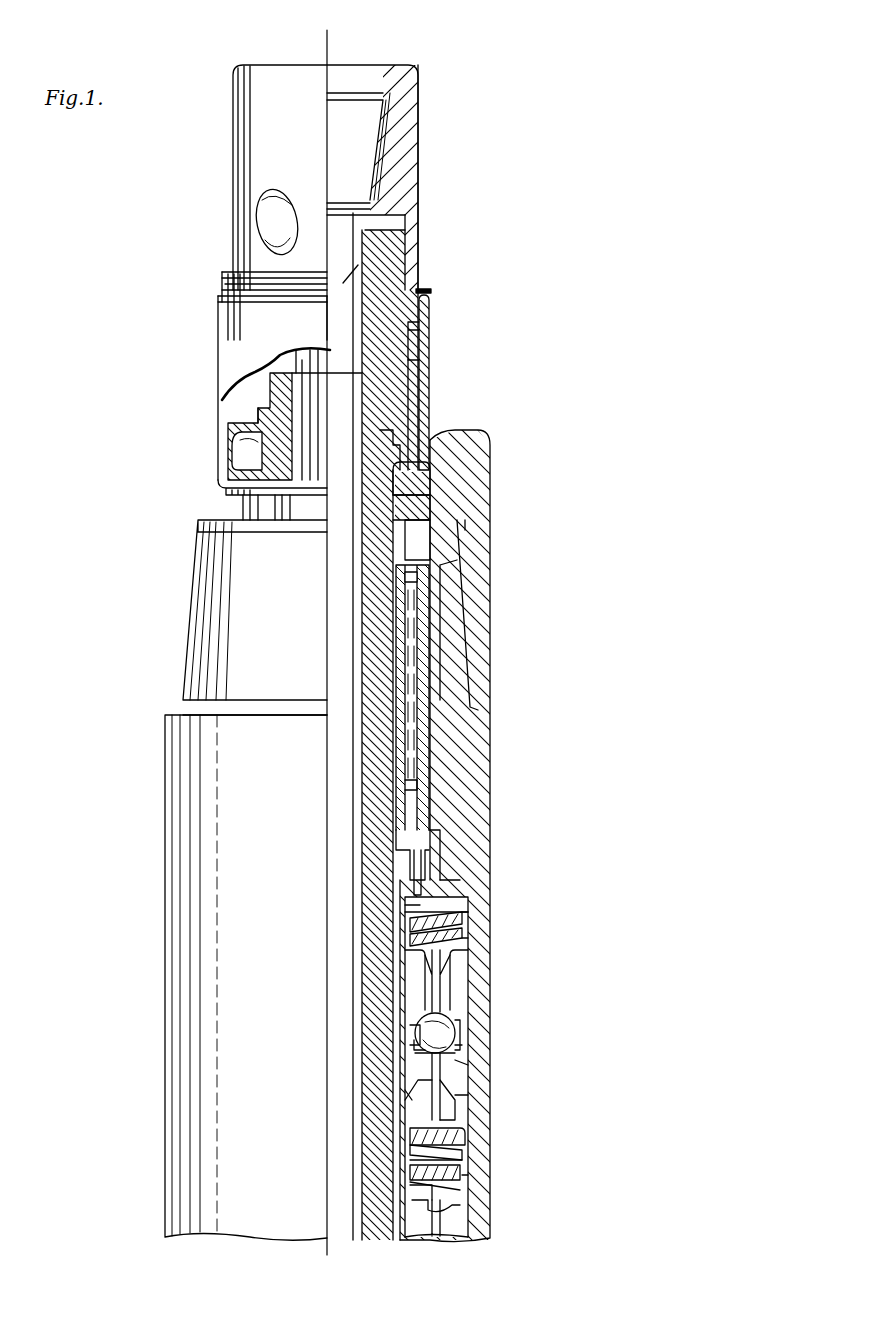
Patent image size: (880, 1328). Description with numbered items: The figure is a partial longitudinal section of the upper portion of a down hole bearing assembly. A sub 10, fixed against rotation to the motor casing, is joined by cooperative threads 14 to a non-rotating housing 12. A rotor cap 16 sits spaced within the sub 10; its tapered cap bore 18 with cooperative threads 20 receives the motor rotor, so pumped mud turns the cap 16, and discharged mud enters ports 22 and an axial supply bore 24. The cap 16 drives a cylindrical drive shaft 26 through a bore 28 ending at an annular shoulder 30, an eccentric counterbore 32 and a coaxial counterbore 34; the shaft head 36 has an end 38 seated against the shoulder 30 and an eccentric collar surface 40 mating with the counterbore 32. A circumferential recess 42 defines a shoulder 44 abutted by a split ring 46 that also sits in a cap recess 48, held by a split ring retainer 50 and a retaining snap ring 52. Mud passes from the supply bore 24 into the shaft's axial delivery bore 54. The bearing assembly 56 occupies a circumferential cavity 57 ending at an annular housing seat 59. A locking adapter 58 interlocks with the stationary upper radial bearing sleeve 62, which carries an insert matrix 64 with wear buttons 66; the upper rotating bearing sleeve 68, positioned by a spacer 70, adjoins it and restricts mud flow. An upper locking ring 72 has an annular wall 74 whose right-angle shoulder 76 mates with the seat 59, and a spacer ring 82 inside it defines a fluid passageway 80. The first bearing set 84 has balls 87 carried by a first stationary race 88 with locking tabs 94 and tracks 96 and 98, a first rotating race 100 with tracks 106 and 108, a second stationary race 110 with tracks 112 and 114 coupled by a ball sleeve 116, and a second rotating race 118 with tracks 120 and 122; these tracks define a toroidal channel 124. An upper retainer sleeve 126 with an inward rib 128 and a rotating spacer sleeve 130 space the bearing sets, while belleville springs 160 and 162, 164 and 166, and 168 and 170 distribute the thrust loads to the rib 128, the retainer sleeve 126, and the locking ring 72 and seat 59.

The sub 10 is at (480, 625).
The housing 12 is at (492, 748).
The cooperative threads 14 is at (195, 575).
The cap 16 is at (450, 145).
The tapered cap bore 18 is at (358, 95).
The cooperative threads 20 is at (418, 115).
The ports 22 is at (260, 222).
The axial supply bore 24 is at (395, 245).
The drive shaft 26 is at (375, 610).
The bore 28 is at (262, 383).
The annular shoulder 30 is at (280, 352).
The eccentric counterbore 32 is at (262, 402).
The coaxial counterbore 34 is at (240, 432).
The head 36 is at (250, 455).
The end 38 is at (292, 395).
The eccentric collar surface 40 is at (385, 418).
The circumferential recess 42 is at (405, 500).
The shoulder 44 is at (425, 465).
The split ring 46 is at (430, 345).
The cap recess 48 is at (425, 322).
The split ring retainer 50 is at (420, 368).
The retaining snap ring 52 is at (432, 291).
The axial delivery bore 54 is at (342, 735).
The bearing assembly 56 is at (378, 1111).
The circumferential cavity 57 is at (475, 1232).
The locking adapter 58 is at (430, 850).
The annular housing seat 59 is at (440, 886).
The stationary upper radial bearing sleeve 62 is at (435, 673).
The insert matrix 64 is at (410, 690).
The wear buttons 66 is at (405, 585).
The upper rotating bearing sleeve 68 is at (410, 645).
The spacer 70 is at (400, 535).
The upper locking ring 72 is at (450, 934).
The annular wall 74 is at (440, 900).
The right-angle shoulder 76 is at (462, 912).
The fluid passageway 80 is at (405, 838).
The spacer ring 82 is at (425, 882).
The first bearing set 84 is at (392, 983).
The balls 87 is at (435, 1055).
The first stationary race 88 is at (465, 995).
The locking tabs 94 is at (480, 1015).
The first toroidal track 96 is at (455, 1030).
The second toroidal track 98 is at (468, 970).
The first rotating race 100 is at (418, 1035).
The first toroidal track 106 is at (425, 1041).
The second toroidal track 108 is at (405, 948).
The second stationary race 110 is at (475, 1078).
The first toroidal track 112 is at (470, 1062).
The second toroidal track 114 is at (462, 1047).
The ball sleeve 116 is at (462, 1098).
The second rotating race 118 is at (395, 1095).
The first toroidal track 120 is at (410, 1080).
The second toroidal track 122 is at (410, 1135).
The toroidal channel 124 is at (412, 1020).
The upper retainer sleeve 126 is at (465, 1182).
The rib 128 is at (462, 1195).
The rotating spacer sleeve 130 is at (420, 1168).
The belleville spring 160 is at (420, 1185).
The belleville spring 162 is at (420, 1205).
The belleville spring 164 is at (465, 1142).
The belleville spring 166 is at (465, 1160).
The belleville spring 168 is at (468, 935).
The belleville spring 170 is at (468, 950).